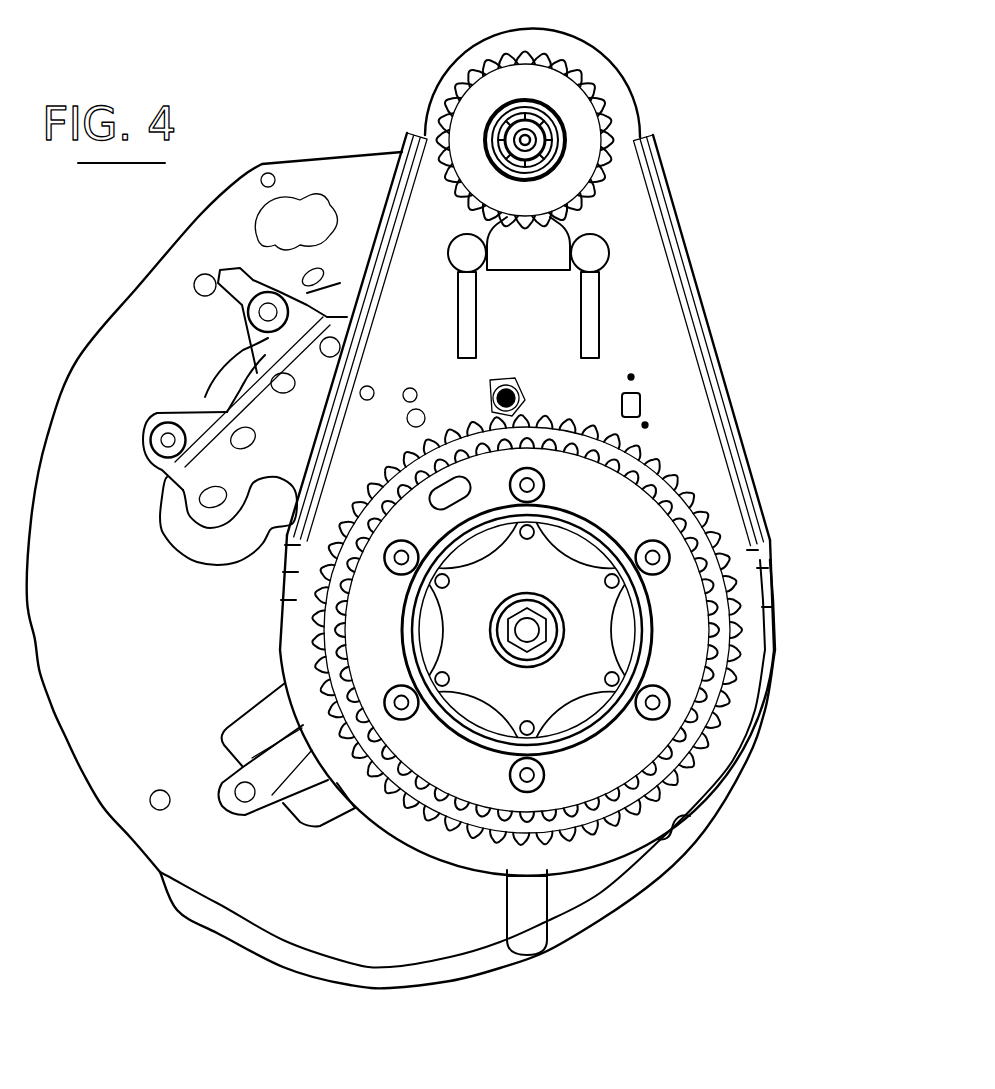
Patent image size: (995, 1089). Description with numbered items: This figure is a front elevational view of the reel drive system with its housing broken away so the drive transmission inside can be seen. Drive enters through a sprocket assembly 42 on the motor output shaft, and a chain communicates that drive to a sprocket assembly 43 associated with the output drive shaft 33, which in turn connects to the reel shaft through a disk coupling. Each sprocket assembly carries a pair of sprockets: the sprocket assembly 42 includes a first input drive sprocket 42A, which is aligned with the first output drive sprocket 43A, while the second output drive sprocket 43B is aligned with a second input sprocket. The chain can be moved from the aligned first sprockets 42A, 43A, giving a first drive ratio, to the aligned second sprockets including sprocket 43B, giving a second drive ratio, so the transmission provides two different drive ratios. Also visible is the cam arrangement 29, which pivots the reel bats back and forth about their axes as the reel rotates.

The cam arrangement 29 is at (94, 302).
The sprocket assembly 42 is at (622, 178).
The first input drive sprocket 42A is at (570, 107).
The sprocket assembly 43 is at (678, 445).
The first output drive sprocket 43A is at (685, 623).
The second output drive sprocket 43B is at (703, 500).
The output drive shaft 33 is at (545, 652).